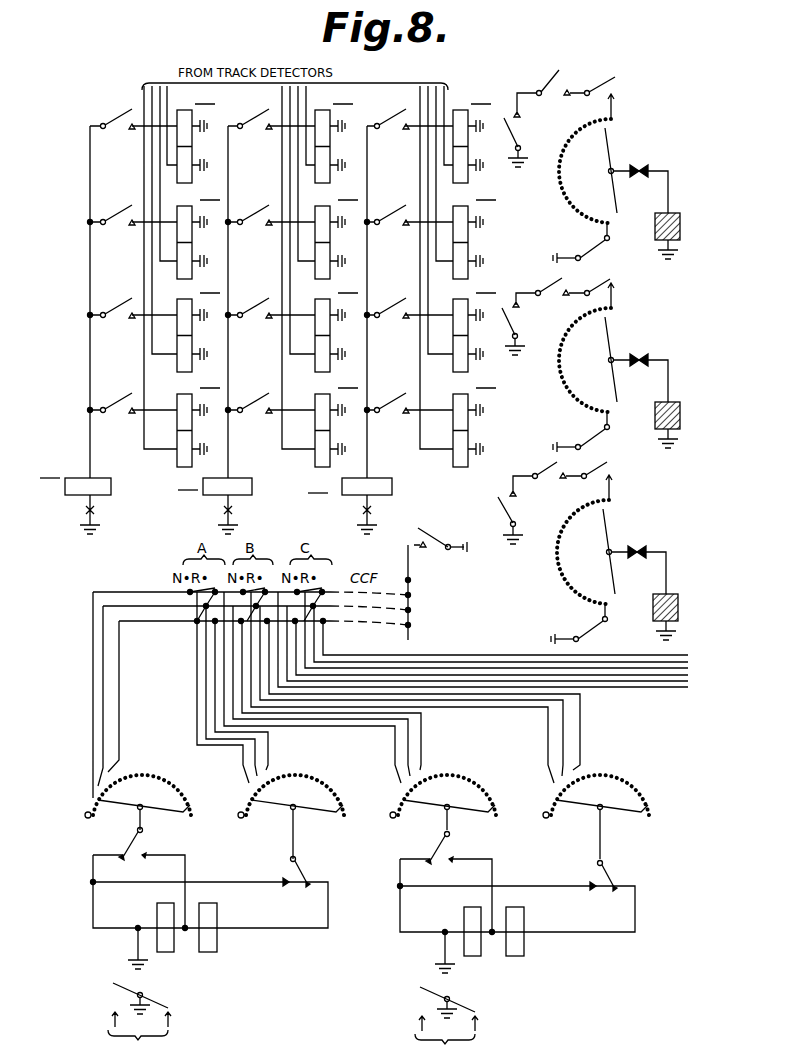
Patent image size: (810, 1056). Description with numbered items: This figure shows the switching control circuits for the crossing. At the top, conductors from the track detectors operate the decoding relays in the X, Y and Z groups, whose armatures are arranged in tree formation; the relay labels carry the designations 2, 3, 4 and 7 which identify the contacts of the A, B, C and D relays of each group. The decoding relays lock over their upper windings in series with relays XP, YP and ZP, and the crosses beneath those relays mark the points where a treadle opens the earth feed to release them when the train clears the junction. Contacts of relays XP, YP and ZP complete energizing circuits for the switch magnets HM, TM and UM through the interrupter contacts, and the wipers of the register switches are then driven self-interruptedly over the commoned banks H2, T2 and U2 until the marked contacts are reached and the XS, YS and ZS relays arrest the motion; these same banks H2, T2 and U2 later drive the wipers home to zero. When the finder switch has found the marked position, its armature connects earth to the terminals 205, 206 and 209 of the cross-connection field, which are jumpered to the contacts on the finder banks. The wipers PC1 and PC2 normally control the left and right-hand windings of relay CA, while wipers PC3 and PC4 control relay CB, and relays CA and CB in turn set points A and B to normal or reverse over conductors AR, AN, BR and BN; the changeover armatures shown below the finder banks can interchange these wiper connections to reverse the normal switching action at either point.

The relays XA YA ZA (row A) 2 is at (293, 135).
The relays XB YB ZB (row B) 3 is at (298, 231).
The relays XC YC ZC (row C) 4 is at (299, 324).
The relays XD YD ZD (row D) 7 is at (299, 419).
The terminal 205 is at (399, 579).
The terminal 206 is at (388, 610).
The terminal 209 is at (388, 625).
The relay XP is at (75, 497).
The relay YP is at (214, 503).
The relay ZP is at (350, 505).
The commoned bank H2 is at (606, 159).
The commoned bank T2 is at (604, 366).
The commoned bank U2 is at (603, 552).
The finder switch wiper PC1 is at (138, 802).
The finder switch wiper PC2 is at (291, 817).
The finder switch wiper PC3 is at (443, 802).
The finder switch wiper PC4 is at (596, 817).
The control relay CA is at (206, 934).
The control relay CB is at (514, 938).